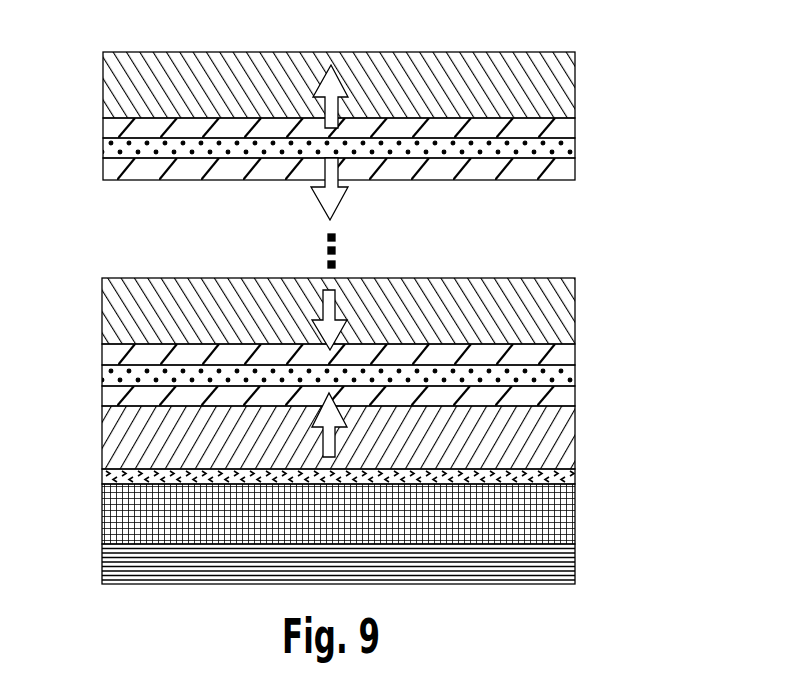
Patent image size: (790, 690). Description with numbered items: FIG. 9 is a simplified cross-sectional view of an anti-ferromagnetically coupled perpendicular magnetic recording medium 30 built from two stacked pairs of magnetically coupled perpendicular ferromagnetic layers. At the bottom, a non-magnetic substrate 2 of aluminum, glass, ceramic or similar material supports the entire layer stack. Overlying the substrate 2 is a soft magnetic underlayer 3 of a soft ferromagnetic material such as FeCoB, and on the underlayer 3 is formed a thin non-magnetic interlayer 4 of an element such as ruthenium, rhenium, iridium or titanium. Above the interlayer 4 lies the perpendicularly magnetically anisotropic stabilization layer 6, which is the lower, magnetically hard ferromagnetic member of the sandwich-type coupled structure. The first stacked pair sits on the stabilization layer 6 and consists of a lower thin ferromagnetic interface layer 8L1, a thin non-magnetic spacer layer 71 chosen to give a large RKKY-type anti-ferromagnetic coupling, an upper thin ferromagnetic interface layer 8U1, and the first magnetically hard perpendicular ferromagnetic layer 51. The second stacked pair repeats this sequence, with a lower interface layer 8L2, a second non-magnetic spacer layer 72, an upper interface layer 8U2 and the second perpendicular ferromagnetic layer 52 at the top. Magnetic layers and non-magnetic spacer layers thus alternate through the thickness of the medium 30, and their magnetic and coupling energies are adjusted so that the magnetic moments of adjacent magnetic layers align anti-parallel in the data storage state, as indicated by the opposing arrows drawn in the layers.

The magnetic medium 30 is at (77, 64).
The perpendicular ferromagnetic layer 52 is at (596, 85).
The upper thin ferromagnetic interface layer 8U2 is at (596, 128).
The thin non-magnetic spacer layer 72 is at (596, 148).
The lower thin ferromagnetic interface layer 8L2 is at (596, 170).
The perpendicular ferromagnetic layer 51 is at (596, 312).
The upper thin ferromagnetic interface layer 8U1 is at (596, 353).
The thin non-magnetic spacer layer 71 is at (596, 375).
The lower thin ferromagnetic interface layer 8L1 is at (596, 397).
The stabilization layer 6 is at (596, 437).
The non-magnetic interlayer 4 is at (596, 475).
The soft magnetic underlayer 3 is at (596, 510).
The non-magnetic substrate 2 is at (596, 562).